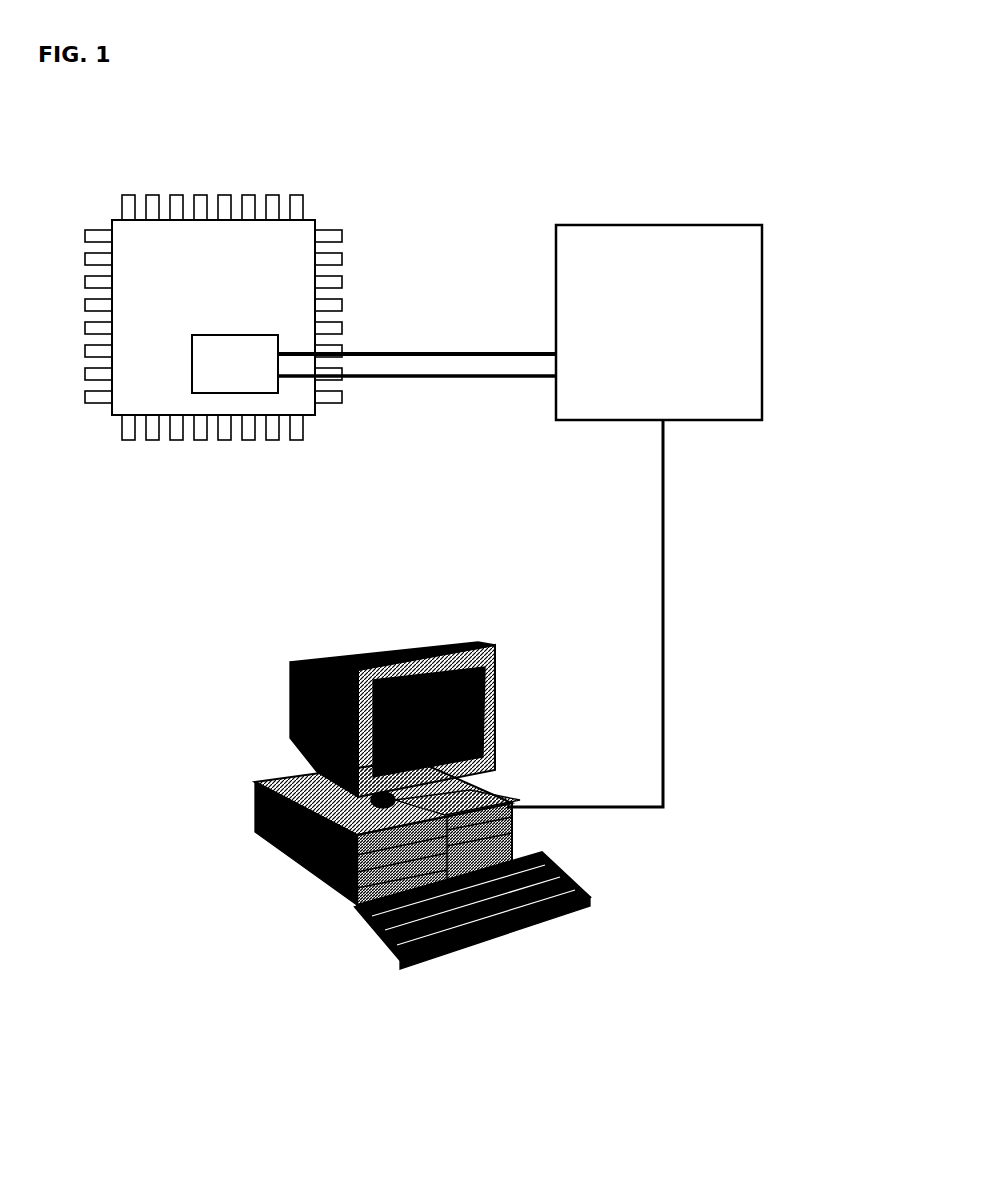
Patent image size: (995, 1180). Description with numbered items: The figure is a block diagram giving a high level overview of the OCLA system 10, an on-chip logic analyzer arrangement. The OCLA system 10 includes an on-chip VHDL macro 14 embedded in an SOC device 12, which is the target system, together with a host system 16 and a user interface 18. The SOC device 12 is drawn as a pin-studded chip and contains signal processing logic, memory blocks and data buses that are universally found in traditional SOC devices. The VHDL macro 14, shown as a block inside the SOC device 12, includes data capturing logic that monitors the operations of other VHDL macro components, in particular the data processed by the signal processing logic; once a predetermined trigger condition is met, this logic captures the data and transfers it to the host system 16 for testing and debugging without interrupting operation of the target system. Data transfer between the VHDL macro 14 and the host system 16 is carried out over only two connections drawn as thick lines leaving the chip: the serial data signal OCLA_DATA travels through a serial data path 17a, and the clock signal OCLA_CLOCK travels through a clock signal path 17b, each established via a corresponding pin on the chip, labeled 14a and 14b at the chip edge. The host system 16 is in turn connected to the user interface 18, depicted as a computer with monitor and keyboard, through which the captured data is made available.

The OCLA system 10 is at (549, 110).
The SOC device 12 is at (290, 245).
The VHDL macro 14 is at (233, 380).
The OCLA data output pin 14a is at (333, 352).
The OCLA clock output pin 14b is at (335, 383).
The host system 16 is at (730, 253).
The serial data path 17a is at (468, 363).
The clock signal path 17b is at (518, 380).
The user interface 18 is at (428, 650).